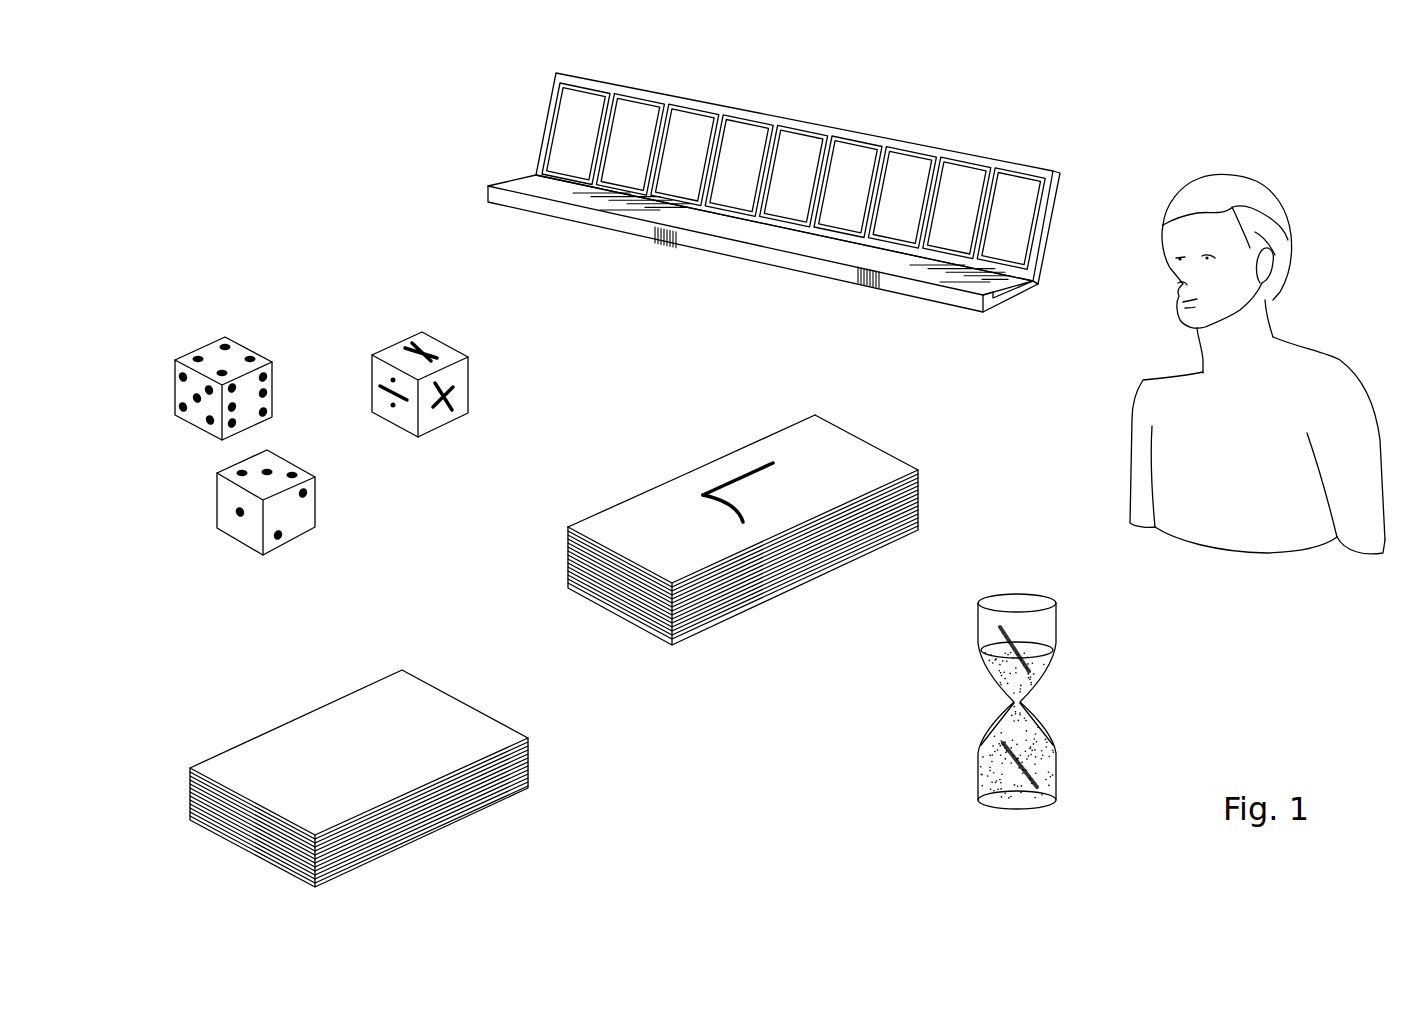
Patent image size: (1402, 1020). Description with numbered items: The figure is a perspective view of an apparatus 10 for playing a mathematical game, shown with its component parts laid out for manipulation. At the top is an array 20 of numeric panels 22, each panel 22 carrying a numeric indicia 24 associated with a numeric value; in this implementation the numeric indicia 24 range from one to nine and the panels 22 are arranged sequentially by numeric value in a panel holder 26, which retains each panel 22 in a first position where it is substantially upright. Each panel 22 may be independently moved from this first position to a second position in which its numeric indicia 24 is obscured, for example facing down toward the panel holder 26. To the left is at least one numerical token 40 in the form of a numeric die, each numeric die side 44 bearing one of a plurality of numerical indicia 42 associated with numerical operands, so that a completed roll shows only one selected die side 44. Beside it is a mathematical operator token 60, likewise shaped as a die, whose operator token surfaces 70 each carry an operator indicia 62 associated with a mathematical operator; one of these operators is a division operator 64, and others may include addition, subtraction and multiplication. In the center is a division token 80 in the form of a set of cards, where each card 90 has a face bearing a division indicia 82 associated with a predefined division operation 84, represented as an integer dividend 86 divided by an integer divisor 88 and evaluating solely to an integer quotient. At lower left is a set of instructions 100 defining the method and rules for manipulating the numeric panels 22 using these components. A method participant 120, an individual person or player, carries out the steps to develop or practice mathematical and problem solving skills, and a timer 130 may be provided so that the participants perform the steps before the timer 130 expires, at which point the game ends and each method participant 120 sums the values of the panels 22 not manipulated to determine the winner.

The apparatus 10 is at (222, 135).
The array of numeric panels 20 is at (1078, 168).
The numeric panel 22 is at (1017, 170).
The numeric indicia 24 is at (1001, 173).
The panel holder 26 is at (528, 110).
The numerical token 40 is at (210, 440).
The numerical indicia 42 is at (240, 345).
The numeric die side 44 is at (272, 402).
The operator token 60 is at (477, 385).
The operator indicia 62 is at (413, 335).
The division operator 64 is at (390, 410).
The operator token surface 70 is at (370, 377).
The division token 80 is at (620, 625).
The division indicia 82 is at (852, 452).
The predefined division operation 84 is at (708, 468).
The integer dividend 86 is at (797, 498).
The integer divisor 88 is at (692, 535).
The card 90 is at (582, 497).
The set of instructions 100 is at (248, 858).
The method participant 120 is at (1293, 215).
The timer 130 is at (1025, 582).